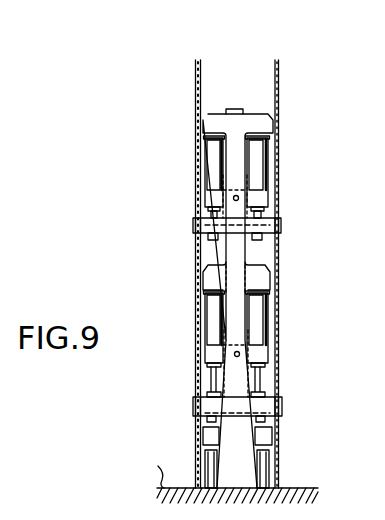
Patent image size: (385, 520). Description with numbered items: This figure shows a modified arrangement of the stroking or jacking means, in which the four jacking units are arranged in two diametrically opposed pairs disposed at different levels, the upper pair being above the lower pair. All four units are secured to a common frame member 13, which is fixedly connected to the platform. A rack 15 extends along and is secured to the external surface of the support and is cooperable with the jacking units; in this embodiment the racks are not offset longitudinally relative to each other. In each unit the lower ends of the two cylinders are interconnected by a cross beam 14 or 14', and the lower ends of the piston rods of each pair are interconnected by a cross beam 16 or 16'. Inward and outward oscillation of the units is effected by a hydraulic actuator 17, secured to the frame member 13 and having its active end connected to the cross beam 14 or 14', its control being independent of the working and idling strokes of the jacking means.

The common frame member 13 is at (240, 248).
The cross beam 14 is at (211, 177).
The cross beam 14' is at (210, 344).
The rack 15 is at (273, 449).
The cross beam 16 is at (255, 226).
The cross beam 16' is at (260, 402).
The hydraulic actuator 17 is at (240, 197).